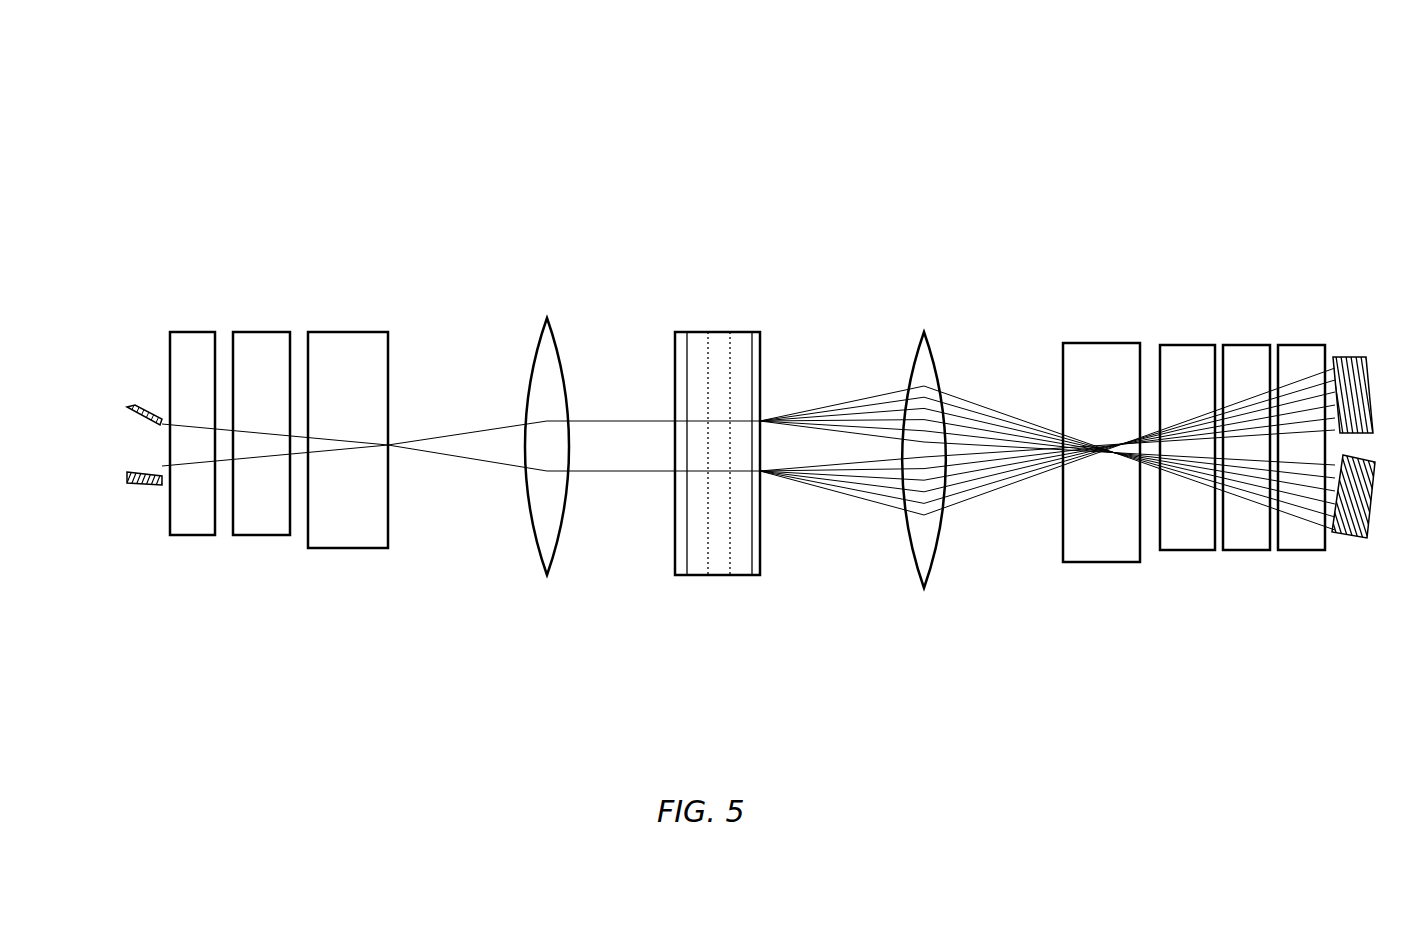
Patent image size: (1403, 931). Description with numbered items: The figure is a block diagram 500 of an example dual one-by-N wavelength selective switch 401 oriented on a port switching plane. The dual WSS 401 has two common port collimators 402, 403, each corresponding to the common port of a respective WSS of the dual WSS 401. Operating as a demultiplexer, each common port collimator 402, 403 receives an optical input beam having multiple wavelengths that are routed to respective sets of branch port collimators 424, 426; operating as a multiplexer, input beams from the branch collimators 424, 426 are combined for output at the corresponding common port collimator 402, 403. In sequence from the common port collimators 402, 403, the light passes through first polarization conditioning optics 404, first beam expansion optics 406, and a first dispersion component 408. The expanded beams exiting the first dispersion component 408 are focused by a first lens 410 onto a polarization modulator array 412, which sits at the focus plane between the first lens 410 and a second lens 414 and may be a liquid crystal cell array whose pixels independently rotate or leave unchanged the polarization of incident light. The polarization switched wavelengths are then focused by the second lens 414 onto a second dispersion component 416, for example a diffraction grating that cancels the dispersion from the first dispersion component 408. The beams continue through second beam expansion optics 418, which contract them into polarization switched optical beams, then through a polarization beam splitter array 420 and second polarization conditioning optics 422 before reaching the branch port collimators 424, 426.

The block diagram 500 is at (234, 93).
The dual 1×N WSS 401 is at (375, 692).
The common port collimator 402 is at (140, 390).
The common port collimator 403 is at (148, 497).
The first polarization conditioning optics 404 is at (207, 322).
The first beam expansion optics 406 is at (274, 322).
The first dispersion component 408 is at (371, 322).
The first lens 410 is at (548, 312).
The polarization modulator array 412 is at (711, 322).
The second lens 414 is at (919, 322).
The second dispersion component 416 is at (1087, 334).
The second beam expansion optics 418 is at (1179, 332).
The polarization beam splitter array 420 is at (1247, 332).
The second polarization conditioning optics 422 is at (1312, 332).
The branch port collimators 424 is at (1356, 342).
The branch port collimators 426 is at (1348, 551).